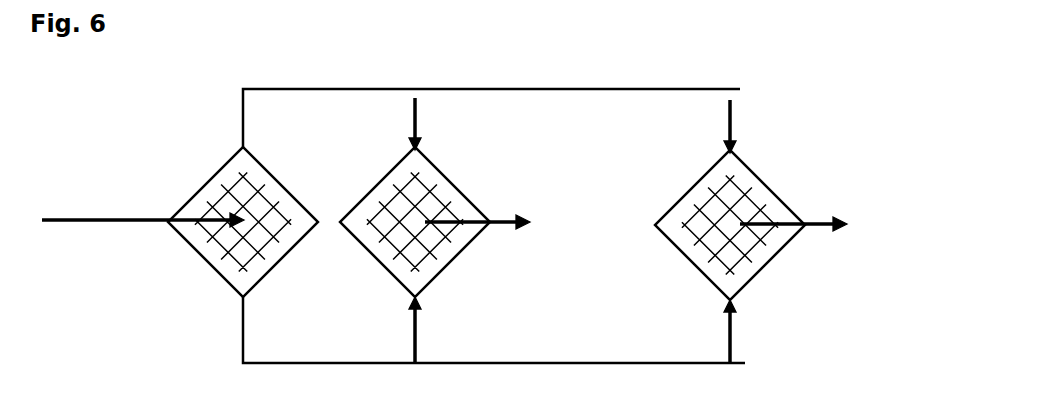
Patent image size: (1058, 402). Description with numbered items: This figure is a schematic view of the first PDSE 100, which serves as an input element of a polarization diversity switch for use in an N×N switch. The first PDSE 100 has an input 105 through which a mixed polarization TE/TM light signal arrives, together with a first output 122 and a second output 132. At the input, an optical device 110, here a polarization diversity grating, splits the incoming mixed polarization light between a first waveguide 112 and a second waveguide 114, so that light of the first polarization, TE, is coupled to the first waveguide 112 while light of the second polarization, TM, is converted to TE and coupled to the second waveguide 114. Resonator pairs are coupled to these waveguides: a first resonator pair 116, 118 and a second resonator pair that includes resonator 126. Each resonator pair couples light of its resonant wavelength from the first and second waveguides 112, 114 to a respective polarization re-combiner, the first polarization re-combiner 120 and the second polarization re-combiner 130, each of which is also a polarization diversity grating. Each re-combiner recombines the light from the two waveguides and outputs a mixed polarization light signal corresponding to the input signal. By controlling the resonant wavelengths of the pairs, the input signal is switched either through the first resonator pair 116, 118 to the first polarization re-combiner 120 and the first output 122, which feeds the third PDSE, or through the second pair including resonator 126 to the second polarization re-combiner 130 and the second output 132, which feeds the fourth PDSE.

The first PDSE 100 is at (810, 79).
The input 105 is at (120, 223).
The optical device 110 is at (230, 175).
The first waveguide 112 is at (242, 115).
The second waveguide 114 is at (242, 348).
The first resonator of first resonator pair 116 is at (383, 127).
The second resonator of first resonator pair 118 is at (540, 330).
The first polarization re-combiner 120 is at (362, 200).
The first output 122 is at (505, 228).
The first resonator of second resonator pair 126 is at (698, 129).
The second polarization re-combiner 130 is at (673, 207).
The second output 132 is at (818, 232).